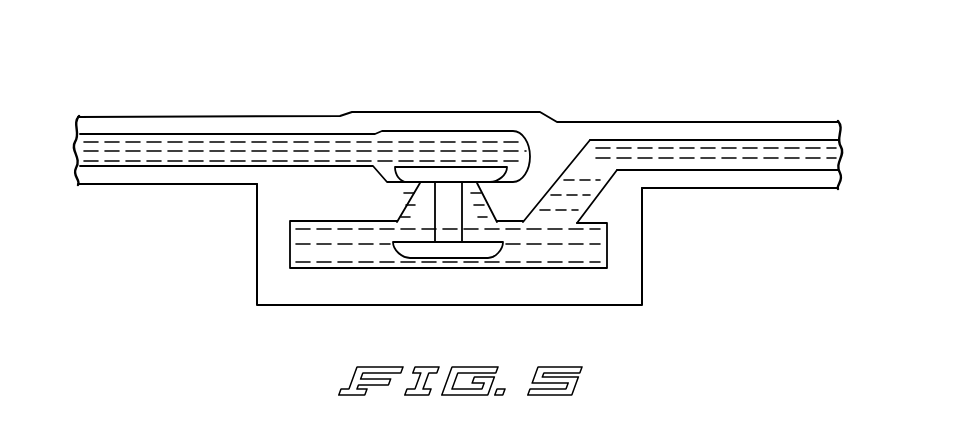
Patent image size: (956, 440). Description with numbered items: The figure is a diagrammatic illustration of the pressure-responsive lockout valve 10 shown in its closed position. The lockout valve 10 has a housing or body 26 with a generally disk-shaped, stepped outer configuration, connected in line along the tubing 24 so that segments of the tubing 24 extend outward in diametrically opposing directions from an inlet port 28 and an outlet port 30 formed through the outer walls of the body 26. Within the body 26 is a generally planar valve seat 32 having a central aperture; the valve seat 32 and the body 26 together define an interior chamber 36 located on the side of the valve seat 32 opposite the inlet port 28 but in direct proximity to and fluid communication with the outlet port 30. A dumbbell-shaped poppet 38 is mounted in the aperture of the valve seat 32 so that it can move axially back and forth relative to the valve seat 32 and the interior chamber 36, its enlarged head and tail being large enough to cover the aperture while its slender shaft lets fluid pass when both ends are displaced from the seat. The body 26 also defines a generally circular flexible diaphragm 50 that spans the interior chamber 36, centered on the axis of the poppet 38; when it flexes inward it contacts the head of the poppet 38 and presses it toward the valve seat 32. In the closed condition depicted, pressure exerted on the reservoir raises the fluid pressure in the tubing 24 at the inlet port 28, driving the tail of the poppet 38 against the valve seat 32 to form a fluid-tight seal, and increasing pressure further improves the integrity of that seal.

The lockout valve 10 is at (656, 63).
The tubing 24 is at (138, 122).
The body 26 is at (635, 265).
The inlet port 28 is at (353, 148).
The outlet port 30 is at (590, 183).
The valve seat 32 is at (368, 200).
The interior chamber 36 is at (578, 257).
The poppet 38 is at (452, 172).
The diaphragm 50 is at (400, 290).